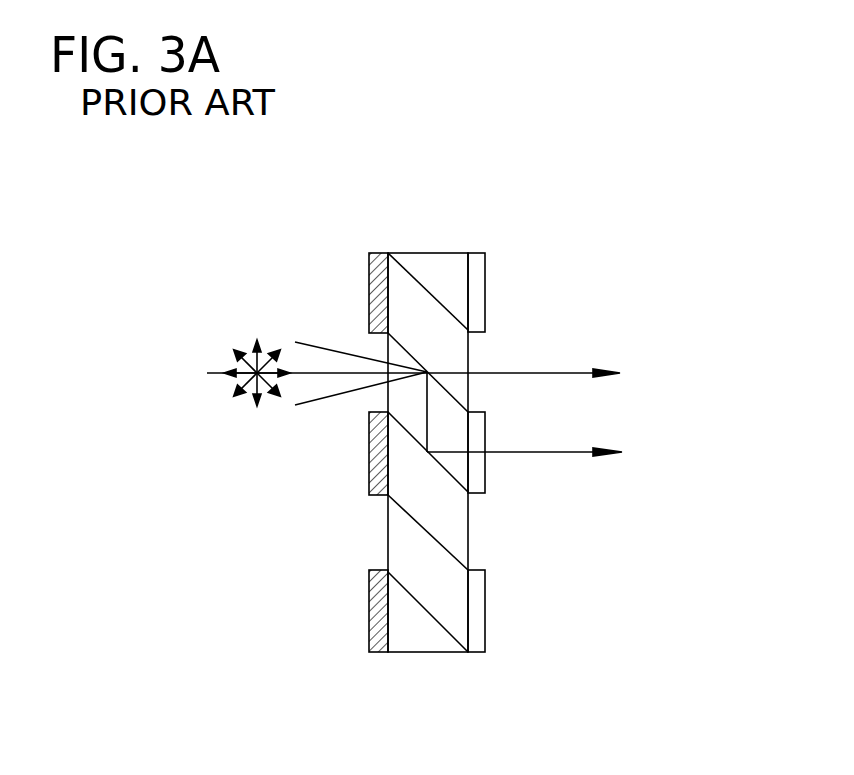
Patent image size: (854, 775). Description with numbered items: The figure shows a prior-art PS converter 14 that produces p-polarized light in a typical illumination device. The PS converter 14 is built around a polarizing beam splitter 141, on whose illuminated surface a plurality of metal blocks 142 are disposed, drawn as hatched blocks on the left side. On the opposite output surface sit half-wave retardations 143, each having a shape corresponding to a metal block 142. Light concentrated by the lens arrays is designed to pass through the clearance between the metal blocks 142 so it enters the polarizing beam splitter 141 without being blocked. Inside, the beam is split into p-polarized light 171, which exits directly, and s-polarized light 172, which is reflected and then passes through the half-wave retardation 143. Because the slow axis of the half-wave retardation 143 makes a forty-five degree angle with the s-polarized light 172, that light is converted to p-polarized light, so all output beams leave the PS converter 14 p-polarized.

The PS converter 14 is at (426, 376).
The polarizing beam splitter 141 is at (428, 253).
The metal block 142 is at (369, 293).
The half-wave retardation 143 is at (478, 283).
The p-polarized light 171 is at (440, 372).
The s-polarized light 172 is at (427, 394).